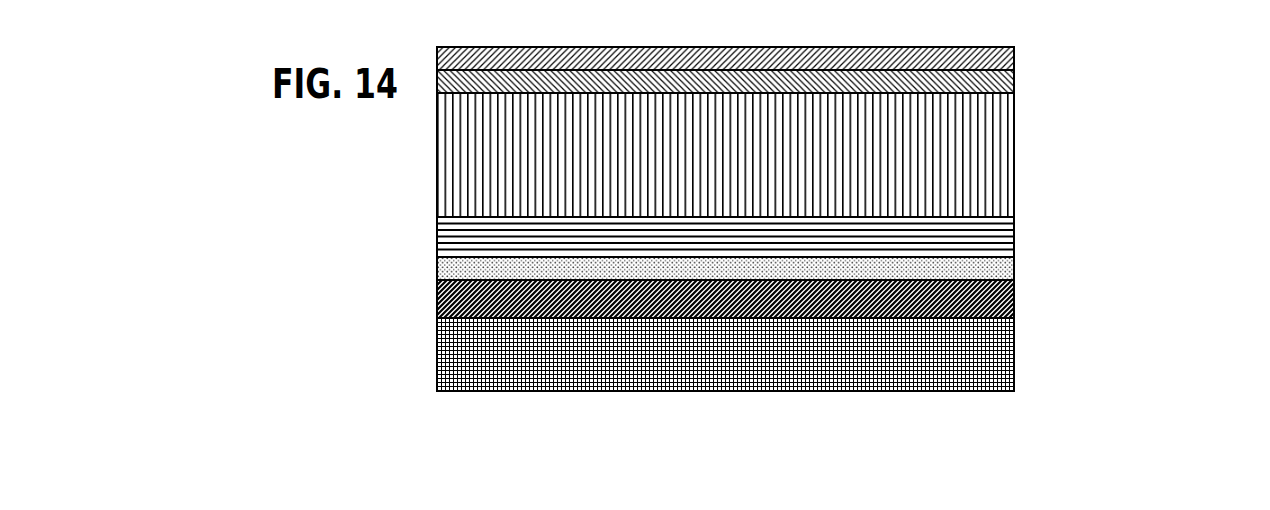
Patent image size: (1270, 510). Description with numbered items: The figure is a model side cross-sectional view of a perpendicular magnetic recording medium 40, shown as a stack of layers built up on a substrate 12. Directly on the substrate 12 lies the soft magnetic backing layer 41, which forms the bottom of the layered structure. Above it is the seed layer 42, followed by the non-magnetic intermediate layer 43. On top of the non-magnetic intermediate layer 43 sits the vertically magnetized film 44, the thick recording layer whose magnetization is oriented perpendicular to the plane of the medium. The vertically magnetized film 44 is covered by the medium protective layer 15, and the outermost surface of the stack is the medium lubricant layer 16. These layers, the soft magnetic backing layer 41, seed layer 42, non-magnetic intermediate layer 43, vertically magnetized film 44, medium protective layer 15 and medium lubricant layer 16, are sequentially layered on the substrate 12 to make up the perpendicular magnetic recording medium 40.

The medium lubricant layer 16 is at (1015, 49).
The medium protective layer 15 is at (1015, 80).
The vertically magnetized film 44 is at (1015, 142).
The non-magnetic intermediate layer 43 is at (1015, 226).
The seed layer 42 is at (1015, 260).
The soft magnetic backing layer 41 is at (1015, 297).
The substrate 12 is at (1015, 343).
The perpendicular magnetic recording medium 40 is at (1190, 35).